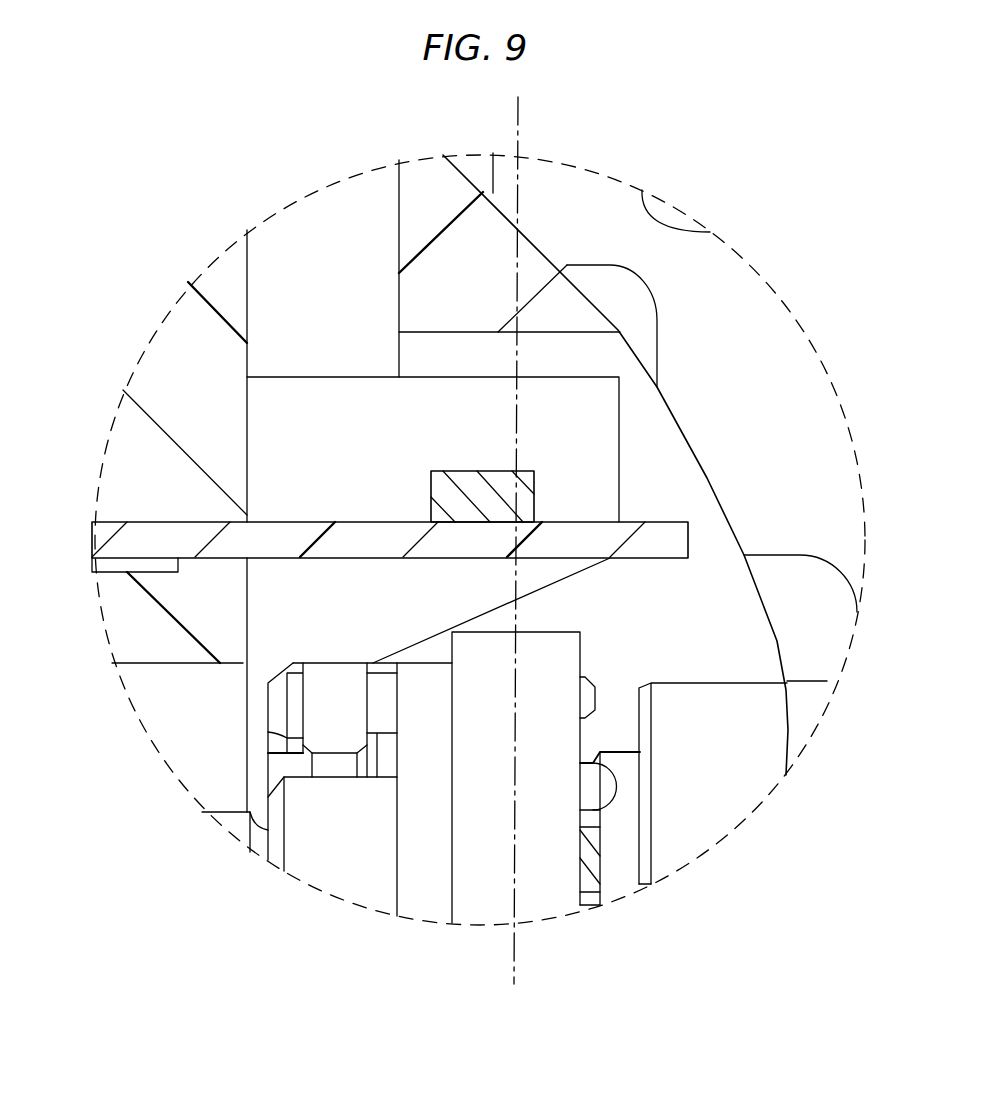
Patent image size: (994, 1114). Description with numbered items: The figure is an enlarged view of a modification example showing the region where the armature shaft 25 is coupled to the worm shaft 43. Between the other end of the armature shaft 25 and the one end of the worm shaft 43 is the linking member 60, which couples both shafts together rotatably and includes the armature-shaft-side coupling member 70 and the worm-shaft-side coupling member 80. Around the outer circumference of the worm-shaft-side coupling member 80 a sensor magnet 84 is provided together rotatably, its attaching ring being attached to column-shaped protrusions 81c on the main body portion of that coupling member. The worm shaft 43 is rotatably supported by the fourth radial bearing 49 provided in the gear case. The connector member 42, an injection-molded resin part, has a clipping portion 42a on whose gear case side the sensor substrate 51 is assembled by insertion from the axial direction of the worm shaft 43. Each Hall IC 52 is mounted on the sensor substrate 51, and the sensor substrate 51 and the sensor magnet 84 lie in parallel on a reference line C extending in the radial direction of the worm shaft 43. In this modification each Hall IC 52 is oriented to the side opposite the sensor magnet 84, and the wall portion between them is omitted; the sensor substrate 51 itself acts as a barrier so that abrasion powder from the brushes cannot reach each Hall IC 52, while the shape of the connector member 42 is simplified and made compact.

The connector member 42 is at (150, 320).
The clipping portion 42a is at (150, 487).
The Hall IC 52 is at (527, 500).
The sensor substrate 51 is at (603, 539).
The armature-shaft-side coupling member 70 is at (305, 706).
The armature shaft 25 is at (229, 836).
The worm-shaft-side coupling member 80 is at (348, 872).
The linking member 60 is at (424, 932).
The sensor magnet 84 is at (548, 873).
The worm shaft 43 is at (618, 856).
The protrusion 81c is at (597, 787).
The fourth radial bearing 49 is at (694, 827).
The reference line C is at (521, 112).